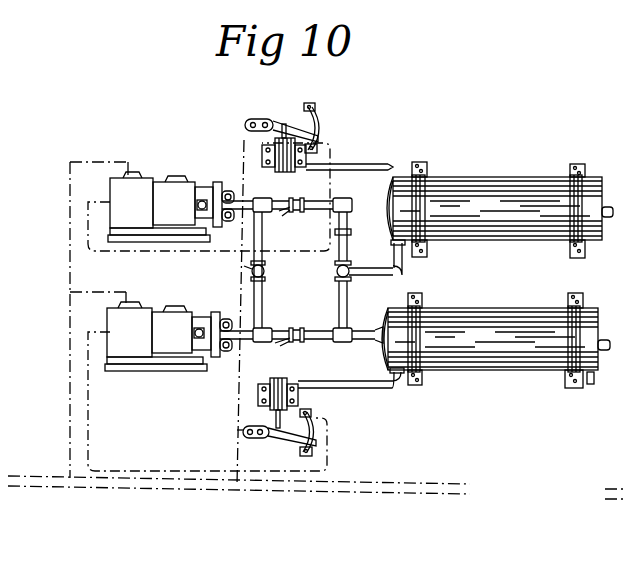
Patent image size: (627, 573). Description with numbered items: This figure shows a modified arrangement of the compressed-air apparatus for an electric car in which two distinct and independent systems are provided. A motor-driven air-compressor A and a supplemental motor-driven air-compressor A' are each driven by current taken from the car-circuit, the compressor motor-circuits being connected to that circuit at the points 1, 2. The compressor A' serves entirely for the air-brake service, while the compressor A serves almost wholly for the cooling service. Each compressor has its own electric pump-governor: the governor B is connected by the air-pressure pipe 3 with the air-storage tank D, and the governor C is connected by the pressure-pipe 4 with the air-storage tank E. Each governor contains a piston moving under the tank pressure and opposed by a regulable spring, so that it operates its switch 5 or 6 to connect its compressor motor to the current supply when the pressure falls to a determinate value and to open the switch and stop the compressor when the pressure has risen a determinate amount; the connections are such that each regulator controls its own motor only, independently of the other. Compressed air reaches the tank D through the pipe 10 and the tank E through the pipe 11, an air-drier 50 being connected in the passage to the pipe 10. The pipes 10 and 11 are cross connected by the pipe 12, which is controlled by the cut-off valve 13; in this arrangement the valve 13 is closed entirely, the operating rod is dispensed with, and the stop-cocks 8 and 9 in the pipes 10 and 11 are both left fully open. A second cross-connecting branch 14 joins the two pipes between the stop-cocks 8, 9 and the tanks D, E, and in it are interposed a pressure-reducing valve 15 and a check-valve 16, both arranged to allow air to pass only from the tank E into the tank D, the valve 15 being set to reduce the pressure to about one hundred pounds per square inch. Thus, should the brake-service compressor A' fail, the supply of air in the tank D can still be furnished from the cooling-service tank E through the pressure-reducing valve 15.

The motor-circuit connection point 1 is at (70, 478).
The motor-circuit connection point 2 is at (237, 485).
The air-pressure pipe 3 is at (349, 155).
The pressure-pipe 4 is at (345, 387).
The switch 5 is at (322, 138).
The switch 6 is at (285, 440).
The stop-cock 8 is at (297, 212).
The stop-cock 9 is at (294, 333).
The pipe 10 is at (317, 207).
The pipe 11 is at (232, 350).
The cross-connecting pipe 12 is at (254, 230).
The cut-off valve 13 is at (249, 274).
The cross-connecting branch 14 is at (341, 300).
The pressure-reducing valve 15 is at (333, 271).
The check-valve 16 is at (346, 233).
The air-drier 50 is at (200, 350).
The motor-driven air-compressor A is at (158, 323).
The supplemental motor-driven air-compressor A' is at (160, 194).
The electric pump-governor B is at (280, 161).
The electric pump-governor C is at (273, 378).
The air-storage tank D is at (478, 176).
The air-storage tank E is at (477, 308).